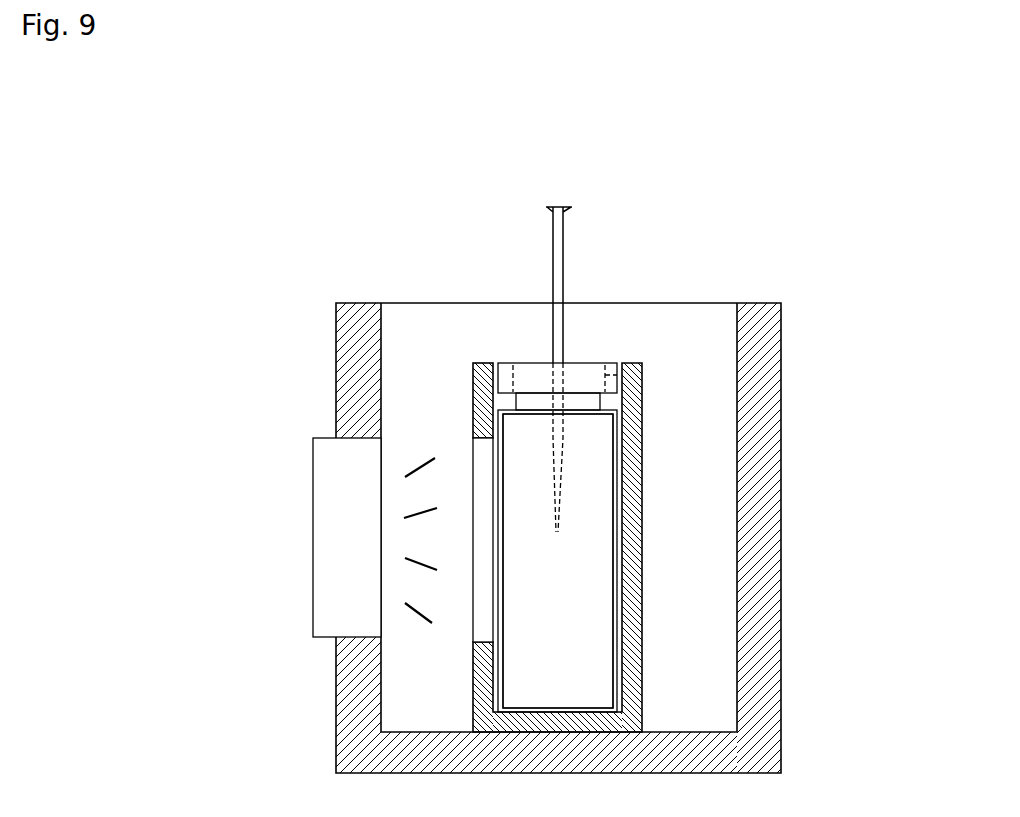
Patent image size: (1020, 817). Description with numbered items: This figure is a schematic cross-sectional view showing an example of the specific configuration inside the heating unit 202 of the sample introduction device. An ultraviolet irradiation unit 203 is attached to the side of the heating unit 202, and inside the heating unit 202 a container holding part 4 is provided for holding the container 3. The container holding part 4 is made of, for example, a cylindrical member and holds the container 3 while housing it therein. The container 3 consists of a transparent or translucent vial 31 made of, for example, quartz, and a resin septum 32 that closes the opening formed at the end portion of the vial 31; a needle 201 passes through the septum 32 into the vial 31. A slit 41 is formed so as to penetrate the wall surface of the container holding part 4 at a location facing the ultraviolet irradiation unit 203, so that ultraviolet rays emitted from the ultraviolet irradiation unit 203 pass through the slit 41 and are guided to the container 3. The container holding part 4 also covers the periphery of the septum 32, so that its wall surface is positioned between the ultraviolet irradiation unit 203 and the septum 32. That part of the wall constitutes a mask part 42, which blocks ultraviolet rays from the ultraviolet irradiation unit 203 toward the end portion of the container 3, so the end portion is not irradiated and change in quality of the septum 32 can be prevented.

The needle 201 is at (565, 255).
The heating unit 202 is at (781, 446).
The ultraviolet irradiation unit 203 is at (313, 530).
The container 3 is at (615, 560).
The vial 31 is at (603, 615).
The septum 32 is at (617, 375).
The container holding part 4 is at (642, 697).
The slit 41 is at (473, 632).
The mask part 42 is at (473, 388).